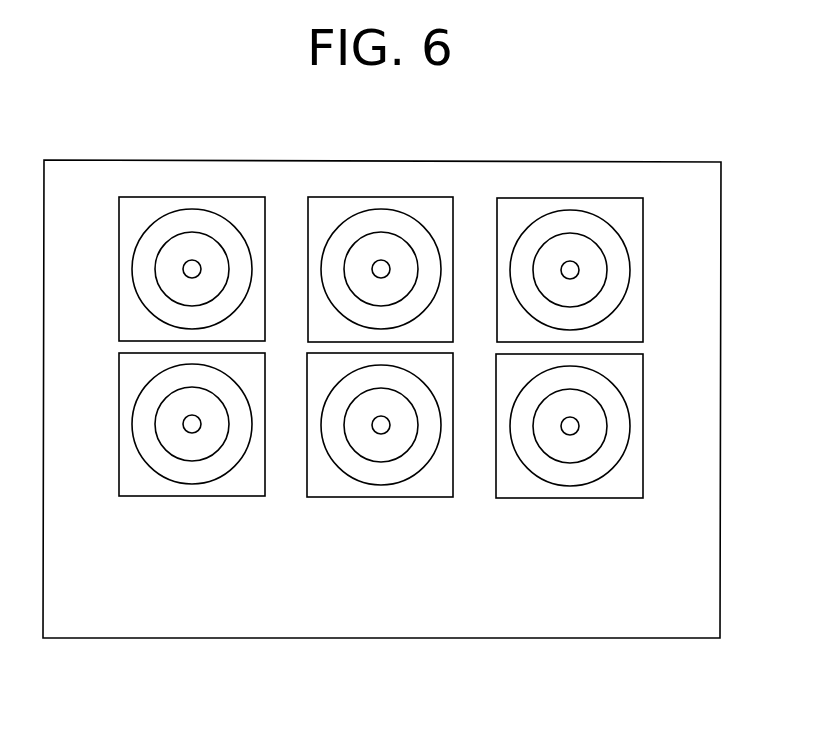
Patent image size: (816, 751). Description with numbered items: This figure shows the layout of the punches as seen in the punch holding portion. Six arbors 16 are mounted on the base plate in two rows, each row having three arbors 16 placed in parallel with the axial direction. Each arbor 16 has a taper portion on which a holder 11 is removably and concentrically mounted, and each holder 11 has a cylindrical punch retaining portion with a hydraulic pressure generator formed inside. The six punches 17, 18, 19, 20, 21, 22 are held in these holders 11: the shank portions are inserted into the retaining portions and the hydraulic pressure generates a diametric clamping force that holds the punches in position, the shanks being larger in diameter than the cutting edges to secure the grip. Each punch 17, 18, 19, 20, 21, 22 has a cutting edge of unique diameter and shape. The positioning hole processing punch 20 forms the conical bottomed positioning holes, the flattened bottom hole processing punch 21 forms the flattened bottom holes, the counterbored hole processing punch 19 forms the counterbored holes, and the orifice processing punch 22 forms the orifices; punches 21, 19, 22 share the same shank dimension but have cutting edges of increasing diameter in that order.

The holder 11 is at (173, 442).
The arbor 16 is at (237, 486).
The punch 17 is at (192, 261).
The punch 18 is at (381, 262).
The counterbored hole processing punch 19 is at (569, 262).
The positioning hole processing punch 20 is at (193, 432).
The flattened bottom hole processing punch 21 is at (381, 432).
The orifice processing punch 22 is at (571, 432).